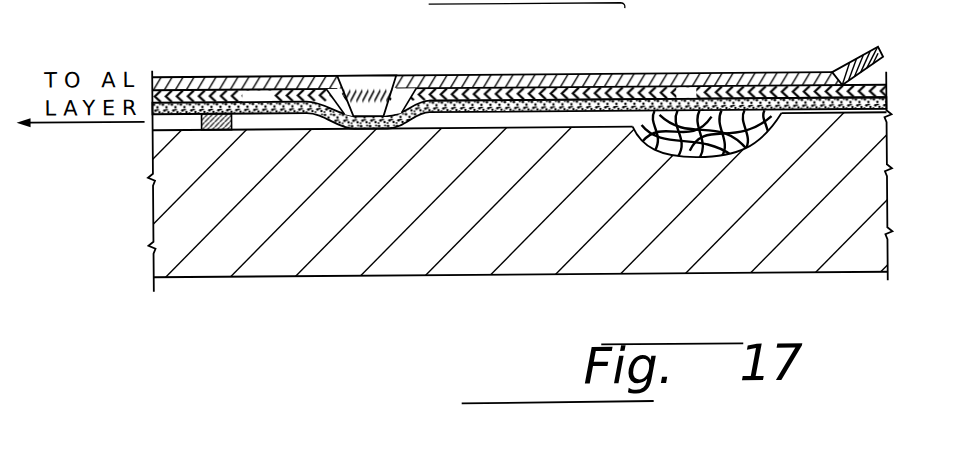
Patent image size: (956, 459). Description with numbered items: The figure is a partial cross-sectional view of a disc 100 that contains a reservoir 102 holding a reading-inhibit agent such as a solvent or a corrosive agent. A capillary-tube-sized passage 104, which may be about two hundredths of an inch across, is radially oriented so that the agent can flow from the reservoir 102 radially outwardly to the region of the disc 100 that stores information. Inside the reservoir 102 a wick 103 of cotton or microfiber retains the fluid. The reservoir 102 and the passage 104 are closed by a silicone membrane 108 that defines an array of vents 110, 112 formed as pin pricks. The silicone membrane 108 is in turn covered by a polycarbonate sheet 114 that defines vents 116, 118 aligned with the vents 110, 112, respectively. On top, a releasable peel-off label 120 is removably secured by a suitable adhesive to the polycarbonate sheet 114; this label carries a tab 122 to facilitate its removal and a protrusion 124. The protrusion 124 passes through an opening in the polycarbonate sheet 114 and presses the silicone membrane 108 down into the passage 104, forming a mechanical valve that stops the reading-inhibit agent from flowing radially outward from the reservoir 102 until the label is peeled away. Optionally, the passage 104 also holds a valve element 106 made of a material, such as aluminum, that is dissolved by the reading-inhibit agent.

The disc 100 is at (421, 256).
The reservoir 102 is at (678, 159).
The wick 103 is at (766, 145).
The capillary-tube-sized passage 104 is at (443, 117).
The valve element 106 is at (210, 110).
The silicone membrane 108 is at (509, 86).
The vent 110 is at (708, 90).
The vent 112 is at (289, 88).
The polycarbonate sheet 114 is at (757, 90).
The vent 116 is at (686, 93).
The vent 118 is at (258, 95).
The peel-off label 120 is at (552, 84).
The tab 122 is at (880, 49).
The protrusion 124 is at (370, 83).